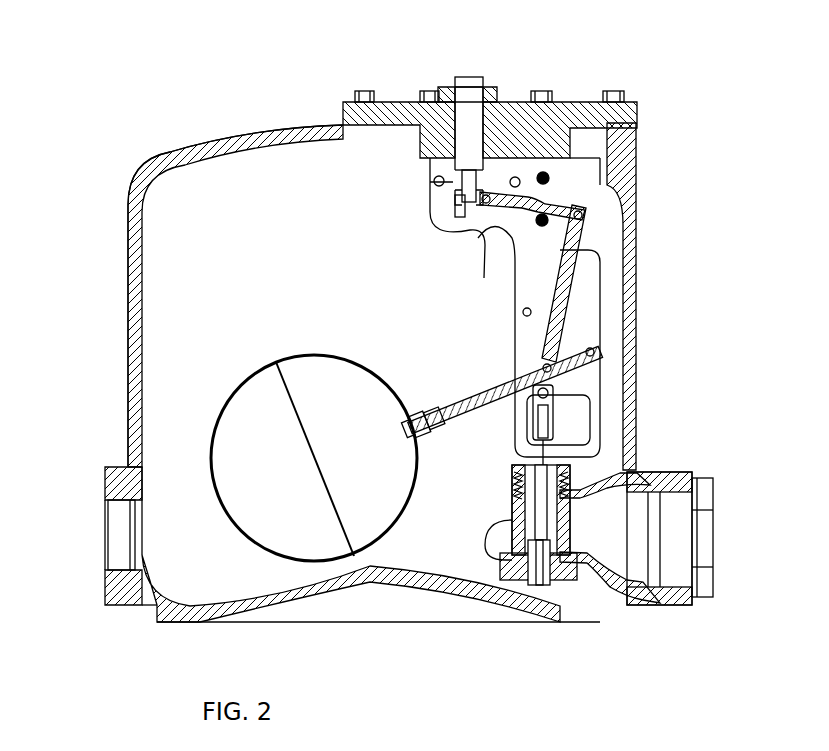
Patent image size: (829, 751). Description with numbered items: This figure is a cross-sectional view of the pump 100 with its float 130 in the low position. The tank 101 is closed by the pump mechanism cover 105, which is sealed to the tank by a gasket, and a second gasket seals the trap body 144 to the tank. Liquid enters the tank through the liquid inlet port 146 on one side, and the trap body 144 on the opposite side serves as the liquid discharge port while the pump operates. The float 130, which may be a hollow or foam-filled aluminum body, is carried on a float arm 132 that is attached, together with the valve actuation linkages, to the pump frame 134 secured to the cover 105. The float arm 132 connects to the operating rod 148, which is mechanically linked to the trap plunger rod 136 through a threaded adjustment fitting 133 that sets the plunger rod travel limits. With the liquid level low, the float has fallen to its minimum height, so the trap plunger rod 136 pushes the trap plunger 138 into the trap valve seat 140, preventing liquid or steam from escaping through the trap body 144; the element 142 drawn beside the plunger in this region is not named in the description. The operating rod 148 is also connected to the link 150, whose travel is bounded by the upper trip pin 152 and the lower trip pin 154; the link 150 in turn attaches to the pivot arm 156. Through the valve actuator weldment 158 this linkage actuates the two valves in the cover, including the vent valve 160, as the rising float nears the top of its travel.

The pump 100 is at (118, 88).
The tank 101 is at (135, 198).
The pump mechanism cover 105 is at (562, 100).
The float 130 is at (255, 388).
The float arm 132 is at (468, 382).
The adjustment fitting 133 is at (605, 378).
The pump frame 134 is at (535, 285).
The trap plunger rod 136 is at (528, 448).
The trap plunger 138 is at (600, 462).
The trap valve seat 140 is at (565, 555).
The valve body 142 is at (513, 510).
The trap body 144 is at (680, 475).
The liquid inlet port 146 is at (120, 555).
The operating rod 148 is at (560, 262).
The link 150 is at (585, 208).
The upper trip pin 152 is at (575, 170).
The lower trip pin 154 is at (483, 255).
The pivot arm 156 is at (468, 212).
The valve actuator weldment 158 is at (425, 170).
The vent valve 160 is at (458, 98).